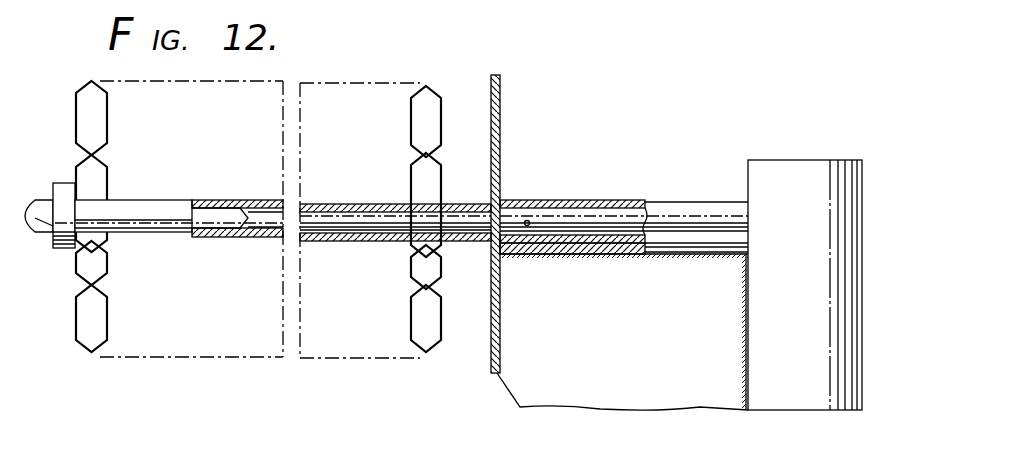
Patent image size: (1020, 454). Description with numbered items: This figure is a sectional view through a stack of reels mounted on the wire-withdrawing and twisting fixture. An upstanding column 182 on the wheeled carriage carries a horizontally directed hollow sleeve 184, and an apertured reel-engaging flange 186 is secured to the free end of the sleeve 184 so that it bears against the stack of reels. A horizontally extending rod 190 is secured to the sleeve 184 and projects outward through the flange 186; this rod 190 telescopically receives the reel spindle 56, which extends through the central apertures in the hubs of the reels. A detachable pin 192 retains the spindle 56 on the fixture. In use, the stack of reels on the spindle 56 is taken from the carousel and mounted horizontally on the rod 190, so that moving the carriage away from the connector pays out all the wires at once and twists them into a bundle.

The spindle 56 is at (317, 203).
The upstanding column 182 is at (753, 337).
The hollow sleeve 184 is at (632, 203).
The reel-engaging flange 186 is at (500, 92).
The rod 190 is at (386, 226).
The detachable pin 192 is at (530, 221).